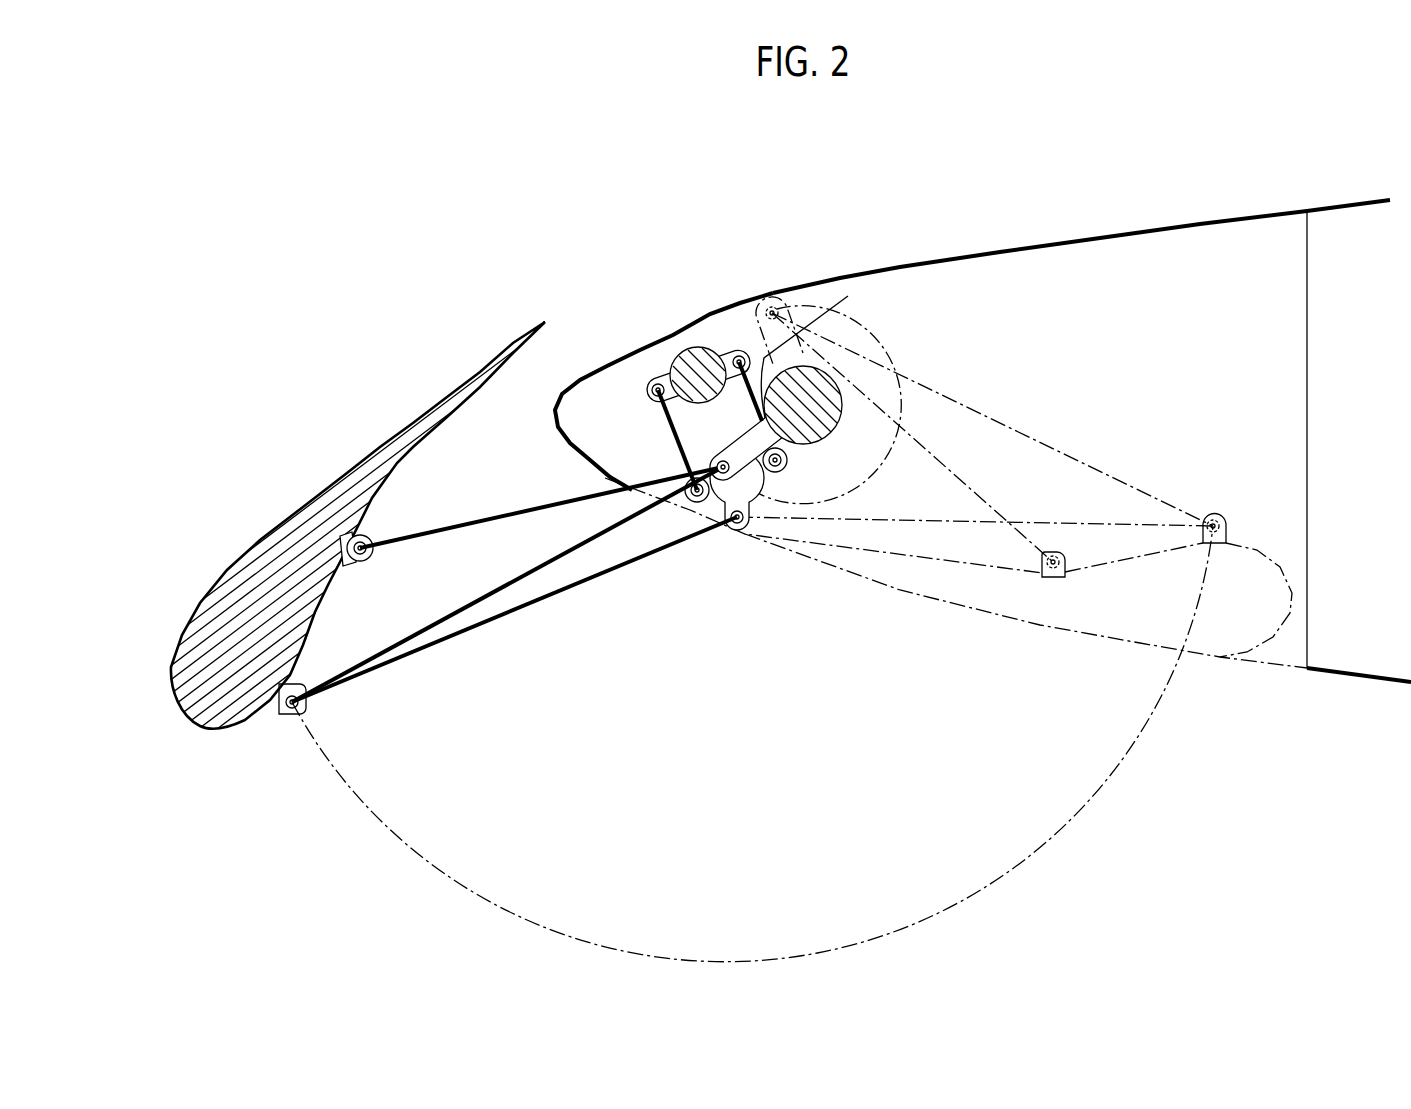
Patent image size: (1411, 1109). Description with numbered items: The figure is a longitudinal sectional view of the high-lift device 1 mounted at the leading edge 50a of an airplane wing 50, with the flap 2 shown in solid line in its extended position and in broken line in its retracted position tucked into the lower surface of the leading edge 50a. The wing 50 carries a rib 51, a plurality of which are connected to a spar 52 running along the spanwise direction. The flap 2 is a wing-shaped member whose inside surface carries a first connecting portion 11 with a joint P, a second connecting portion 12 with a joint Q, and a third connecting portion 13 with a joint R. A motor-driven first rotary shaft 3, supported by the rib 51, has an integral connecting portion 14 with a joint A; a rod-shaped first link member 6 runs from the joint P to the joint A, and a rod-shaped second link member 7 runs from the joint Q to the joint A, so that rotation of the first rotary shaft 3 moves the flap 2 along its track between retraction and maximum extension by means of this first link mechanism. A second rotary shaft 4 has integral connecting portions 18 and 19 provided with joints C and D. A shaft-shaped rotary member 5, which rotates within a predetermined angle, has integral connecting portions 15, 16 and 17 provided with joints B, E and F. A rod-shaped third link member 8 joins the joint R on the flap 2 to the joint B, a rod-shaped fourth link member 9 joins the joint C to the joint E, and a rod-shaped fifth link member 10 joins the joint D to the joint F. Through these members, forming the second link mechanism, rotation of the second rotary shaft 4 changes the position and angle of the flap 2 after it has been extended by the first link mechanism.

The high-lift device 1 is at (752, 407).
The flap 2 is at (380, 438).
The first rotary shaft 3 is at (841, 383).
The second rotary shaft 4 is at (684, 315).
The rotary member 5 is at (713, 535).
The first link member 6 is at (477, 520).
The second link member 7 is at (487, 594).
The third link member 8 is at (572, 590).
The fourth link member 9 is at (667, 418).
The fifth link member 10 is at (814, 394).
The first connecting portion 11 is at (735, 561).
The second connecting portion 12 is at (775, 614).
The third connecting portion 13 is at (775, 614).
The connecting portion 14 is at (716, 346).
The connecting portion 15 is at (734, 561).
The connecting portion 16 is at (675, 541).
The connecting portion 17 is at (838, 479).
The connecting portion 18 is at (642, 327).
The connecting portion 19 is at (736, 297).
The wing 50 is at (975, 397).
The leading edge 50a is at (551, 390).
The rib 51 is at (1116, 257).
The spar 52 is at (1310, 383).
The joint A is at (712, 469).
The joint B is at (735, 524).
The joint C is at (656, 384).
The joint D is at (733, 352).
The joint E is at (697, 502).
The joint F is at (783, 458).
The joint P is at (368, 540).
The joint Q is at (788, 606).
The joint R is at (302, 712).